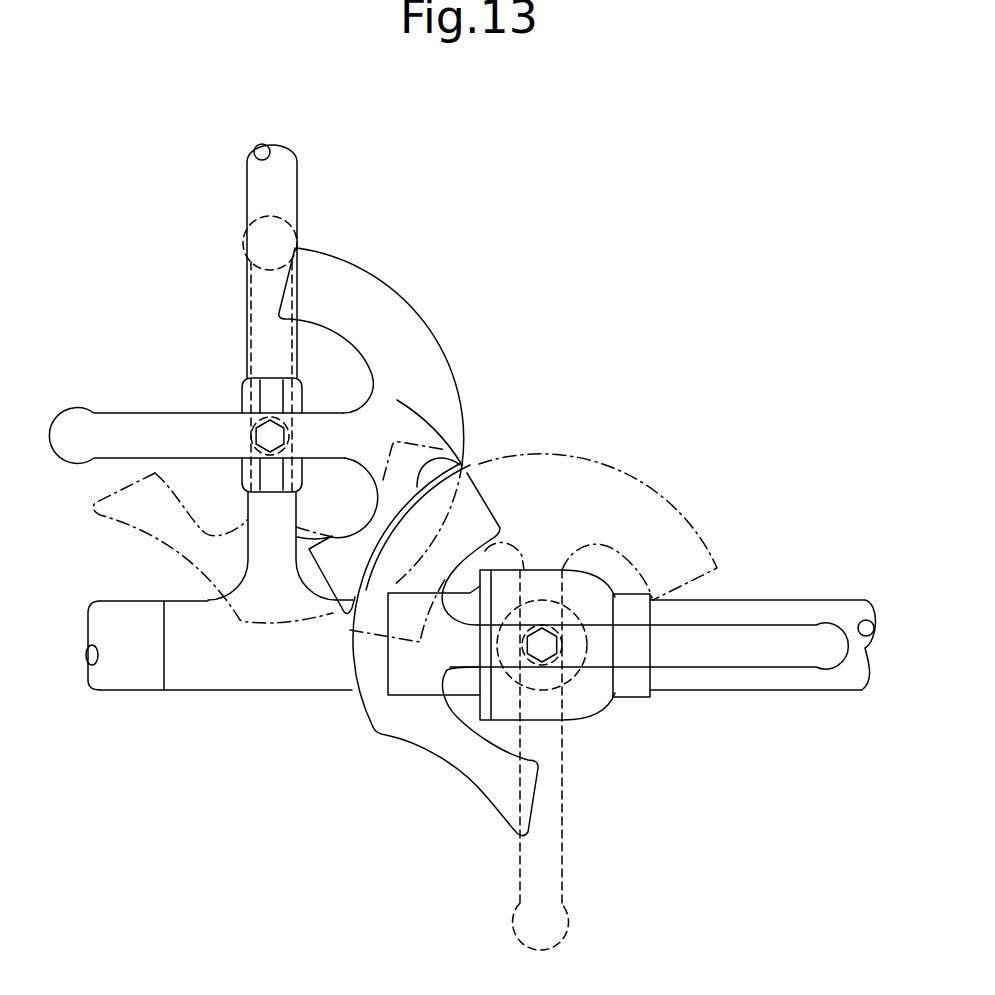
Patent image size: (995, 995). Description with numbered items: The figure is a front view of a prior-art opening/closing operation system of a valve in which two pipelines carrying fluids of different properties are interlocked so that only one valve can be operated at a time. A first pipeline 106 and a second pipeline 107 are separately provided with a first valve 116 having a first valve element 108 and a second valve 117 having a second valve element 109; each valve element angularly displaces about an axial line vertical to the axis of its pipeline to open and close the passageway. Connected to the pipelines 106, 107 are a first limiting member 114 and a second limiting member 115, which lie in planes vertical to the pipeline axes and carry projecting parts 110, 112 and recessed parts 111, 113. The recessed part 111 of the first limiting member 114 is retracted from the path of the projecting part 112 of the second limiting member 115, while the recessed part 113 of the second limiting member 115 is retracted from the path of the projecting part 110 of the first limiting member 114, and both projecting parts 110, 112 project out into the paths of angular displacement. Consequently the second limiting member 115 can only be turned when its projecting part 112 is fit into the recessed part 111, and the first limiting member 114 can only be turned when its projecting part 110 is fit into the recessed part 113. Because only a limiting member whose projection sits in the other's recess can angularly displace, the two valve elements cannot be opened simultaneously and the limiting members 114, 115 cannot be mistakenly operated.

The first pipeline 106 is at (760, 613).
The second pipeline 107 is at (265, 183).
The first valve element 108 is at (576, 689).
The second valve element 109 is at (262, 413).
The projecting part 110 is at (362, 612).
The recessed part 111 is at (455, 757).
The projecting part 112 is at (430, 343).
The recessed part 113 is at (453, 462).
The first limiting member 114 is at (437, 655).
The second limiting member 115 is at (393, 411).
The first valve 116 is at (572, 702).
The second valve 117 is at (270, 393).